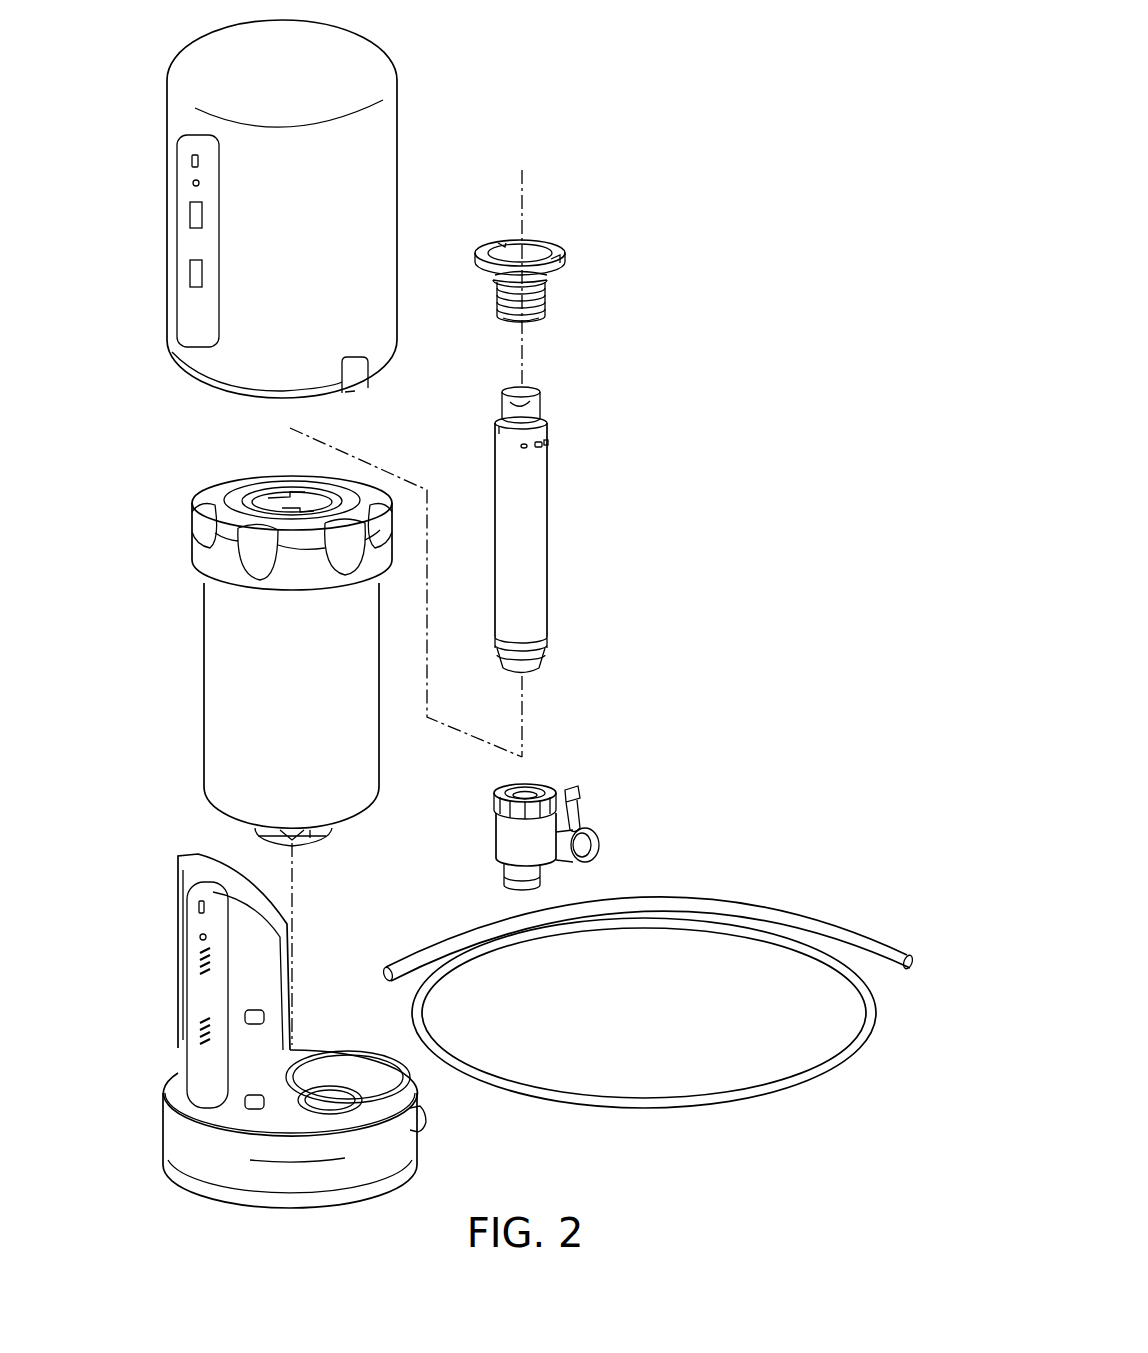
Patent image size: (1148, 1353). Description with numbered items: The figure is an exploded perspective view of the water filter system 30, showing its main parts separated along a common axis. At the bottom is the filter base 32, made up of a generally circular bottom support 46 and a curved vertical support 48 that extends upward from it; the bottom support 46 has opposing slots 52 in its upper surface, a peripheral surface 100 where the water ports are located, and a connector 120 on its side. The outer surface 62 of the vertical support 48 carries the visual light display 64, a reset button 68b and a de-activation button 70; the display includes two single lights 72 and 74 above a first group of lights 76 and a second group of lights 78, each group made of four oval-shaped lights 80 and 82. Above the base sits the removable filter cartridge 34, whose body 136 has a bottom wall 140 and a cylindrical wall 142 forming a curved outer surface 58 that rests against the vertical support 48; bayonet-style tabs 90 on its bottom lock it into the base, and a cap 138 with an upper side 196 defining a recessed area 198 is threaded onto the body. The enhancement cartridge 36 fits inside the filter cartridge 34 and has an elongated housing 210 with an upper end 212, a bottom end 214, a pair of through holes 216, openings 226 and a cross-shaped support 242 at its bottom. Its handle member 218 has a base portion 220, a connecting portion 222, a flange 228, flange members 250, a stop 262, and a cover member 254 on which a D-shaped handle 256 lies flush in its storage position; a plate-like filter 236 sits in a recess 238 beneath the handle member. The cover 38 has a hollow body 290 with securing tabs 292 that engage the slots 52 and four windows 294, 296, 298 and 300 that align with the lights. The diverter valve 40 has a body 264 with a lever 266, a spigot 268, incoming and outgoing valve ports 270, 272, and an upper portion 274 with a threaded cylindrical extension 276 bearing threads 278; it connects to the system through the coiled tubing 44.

The filter system 30 is at (806, 240).
The filter base 32 is at (311, 1032).
The filter cartridge 34 is at (252, 664).
The enhancement cartridge 36 is at (554, 547).
The cover 38 is at (330, 222).
The diverter valve 40 is at (549, 824).
The tubing 44 is at (749, 1130).
The bottom support 46 is at (337, 1159).
The vertical support 48 is at (200, 981).
The slots 52 is at (366, 1124).
The outer surface 58 is at (276, 728).
The outer surface 62 is at (197, 995).
The visual light display 64 is at (207, 1087).
The reset button 68b is at (254, 1010).
The de-activation button 70 is at (257, 1095).
The light 72 is at (200, 908).
The light 74 is at (200, 938).
The first group of lights 76 is at (163, 970).
The second group of lights 78 is at (164, 1018).
The lights 80 is at (200, 958).
The lights 82 is at (200, 1036).
The tabs 90 is at (323, 840).
The peripheral surface 100 is at (345, 1175).
The connector 120 is at (426, 1120).
The body 136 is at (251, 614).
The cap 138 is at (255, 515).
The bottom wall 140 is at (368, 815).
The cylindrical wall 142 is at (245, 755).
The upper side 196 is at (218, 493).
The recessed area 198 is at (238, 500).
The housing 210 is at (495, 487).
The upper end 212 is at (536, 447).
The bottom end 214 is at (551, 605).
The through holes 216 is at (549, 433).
The handle member 218 is at (544, 282).
The base portion 220 is at (566, 278).
The connecting portion 222 is at (535, 324).
The openings 226 is at (541, 450).
The flange 228 is at (498, 290).
The filter 236 is at (505, 320).
The recess 238 is at (538, 318).
The cross-shaped support 242 is at (533, 670).
The flange members 250 is at (546, 284).
The cover member 254 is at (538, 252).
The D-shaped handle 256 is at (482, 248).
The stop 262 is at (485, 280).
The body 264 is at (515, 837).
The lever 266 is at (583, 848).
The spigot 268 is at (518, 880).
The incoming valve port 270 is at (601, 818).
The outgoing valve port 272 is at (554, 775).
The upper portion 274 is at (477, 812).
The cylindrical extension 276 is at (542, 790).
The threads 278 is at (518, 796).
The hollow body 290 is at (345, 168).
The securing tabs 292 is at (365, 385).
The first window 294 is at (200, 158).
The second window 296 is at (200, 184).
The third window 298 is at (205, 222).
The fourth window 300 is at (205, 280).